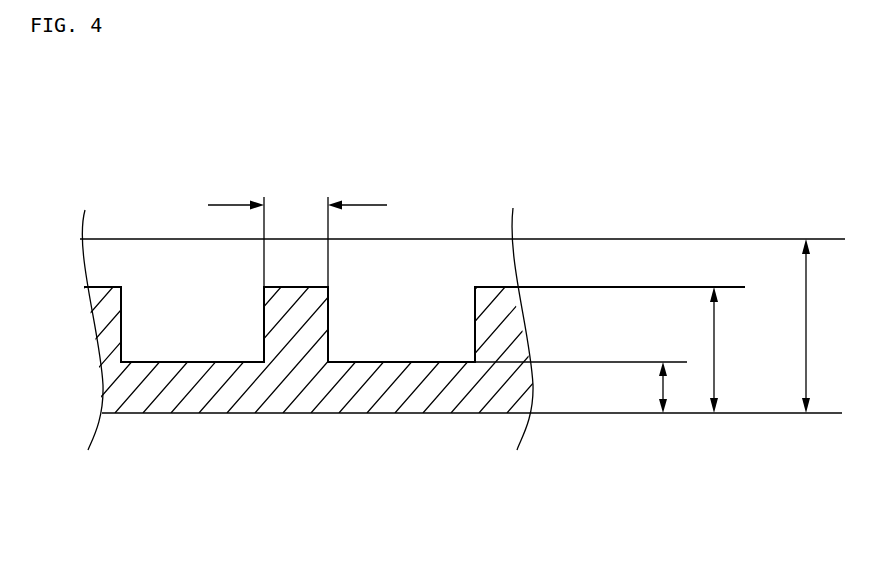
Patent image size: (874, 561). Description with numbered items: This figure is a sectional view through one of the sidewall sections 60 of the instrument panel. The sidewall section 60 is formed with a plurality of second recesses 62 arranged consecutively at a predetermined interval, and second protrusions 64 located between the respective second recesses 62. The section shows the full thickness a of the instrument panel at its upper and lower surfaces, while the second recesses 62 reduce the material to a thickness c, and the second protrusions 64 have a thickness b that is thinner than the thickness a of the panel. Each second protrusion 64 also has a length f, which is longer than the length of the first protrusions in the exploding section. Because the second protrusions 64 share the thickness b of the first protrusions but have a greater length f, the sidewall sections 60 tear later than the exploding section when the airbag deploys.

The sidewall section 60 is at (480, 210).
The second recess 62 is at (373, 362).
The second protrusion 64 is at (297, 287).